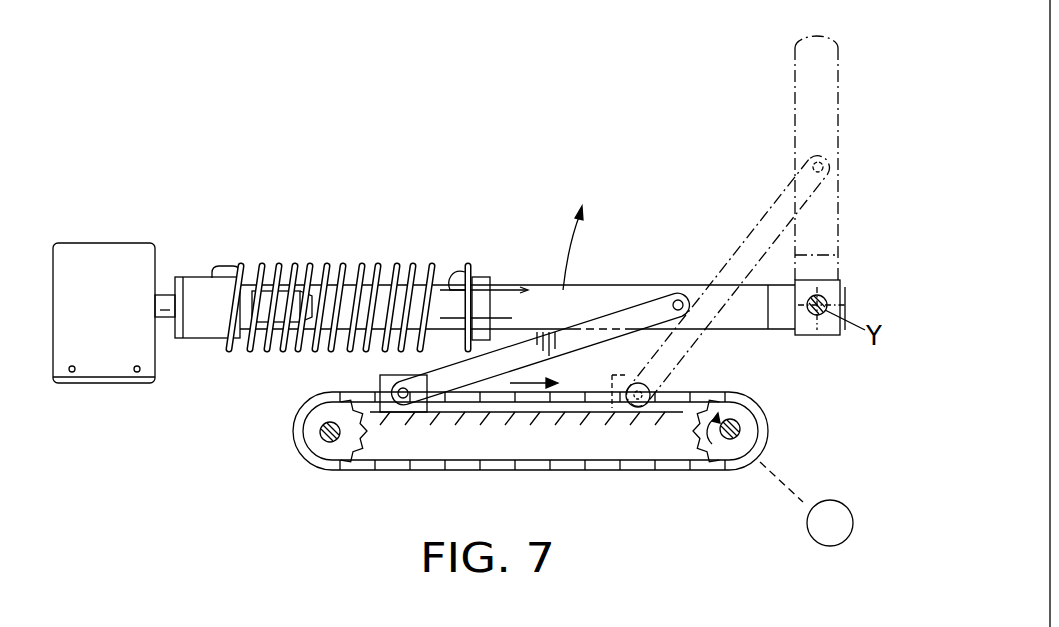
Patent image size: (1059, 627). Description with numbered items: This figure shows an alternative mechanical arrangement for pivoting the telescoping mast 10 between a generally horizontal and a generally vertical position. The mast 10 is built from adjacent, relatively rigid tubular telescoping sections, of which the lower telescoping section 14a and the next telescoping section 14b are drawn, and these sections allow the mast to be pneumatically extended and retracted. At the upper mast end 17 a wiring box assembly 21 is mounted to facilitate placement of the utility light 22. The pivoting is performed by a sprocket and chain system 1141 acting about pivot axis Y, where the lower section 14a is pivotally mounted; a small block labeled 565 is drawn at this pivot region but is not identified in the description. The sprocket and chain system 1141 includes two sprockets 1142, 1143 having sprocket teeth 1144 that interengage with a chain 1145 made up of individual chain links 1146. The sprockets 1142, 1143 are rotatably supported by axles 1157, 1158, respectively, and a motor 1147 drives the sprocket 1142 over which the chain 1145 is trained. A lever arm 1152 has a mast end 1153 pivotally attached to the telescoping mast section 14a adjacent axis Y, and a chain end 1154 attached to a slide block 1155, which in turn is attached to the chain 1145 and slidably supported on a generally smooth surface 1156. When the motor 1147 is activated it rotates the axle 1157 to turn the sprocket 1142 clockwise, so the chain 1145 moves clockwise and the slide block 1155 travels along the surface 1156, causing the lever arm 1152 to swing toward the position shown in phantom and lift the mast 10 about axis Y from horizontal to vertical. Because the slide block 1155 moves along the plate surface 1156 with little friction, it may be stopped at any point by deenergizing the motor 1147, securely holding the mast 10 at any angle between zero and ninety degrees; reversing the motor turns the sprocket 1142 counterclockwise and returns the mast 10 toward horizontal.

The telescoping mast 10 is at (453, 208).
The utility light 22 is at (107, 240).
The wiring box assembly 21 is at (200, 290).
The upper mast end 17 is at (250, 307).
The telescoping section 14a is at (543, 285).
The telescoping section 14b is at (293, 283).
The pivot block 565 is at (820, 302).
The lever arm 1152 is at (624, 313).
The mast end 1153 is at (674, 297).
The chain end 1154 is at (410, 400).
The slide block 1155 is at (380, 382).
The smooth surface 1156 is at (527, 420).
The sprocket and chain system 1141 is at (535, 473).
The sprocket 1142 is at (760, 414).
The sprocket 1143 is at (312, 448).
The sprocket teeth 1144 is at (366, 445).
The chain 1145 is at (596, 471).
The chain links 1146 is at (657, 472).
The motor 1147 is at (830, 546).
The axle 1157 is at (741, 428).
The axle 1158 is at (325, 432).